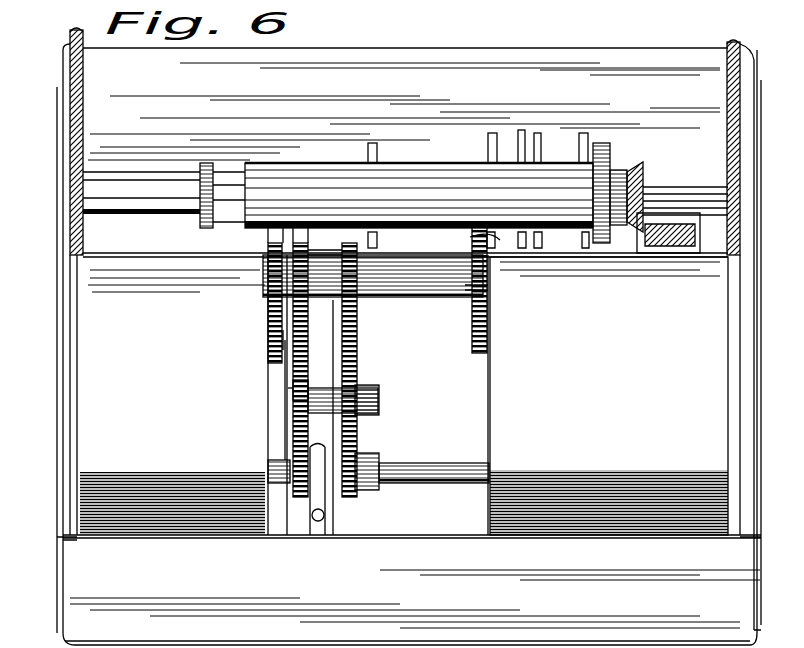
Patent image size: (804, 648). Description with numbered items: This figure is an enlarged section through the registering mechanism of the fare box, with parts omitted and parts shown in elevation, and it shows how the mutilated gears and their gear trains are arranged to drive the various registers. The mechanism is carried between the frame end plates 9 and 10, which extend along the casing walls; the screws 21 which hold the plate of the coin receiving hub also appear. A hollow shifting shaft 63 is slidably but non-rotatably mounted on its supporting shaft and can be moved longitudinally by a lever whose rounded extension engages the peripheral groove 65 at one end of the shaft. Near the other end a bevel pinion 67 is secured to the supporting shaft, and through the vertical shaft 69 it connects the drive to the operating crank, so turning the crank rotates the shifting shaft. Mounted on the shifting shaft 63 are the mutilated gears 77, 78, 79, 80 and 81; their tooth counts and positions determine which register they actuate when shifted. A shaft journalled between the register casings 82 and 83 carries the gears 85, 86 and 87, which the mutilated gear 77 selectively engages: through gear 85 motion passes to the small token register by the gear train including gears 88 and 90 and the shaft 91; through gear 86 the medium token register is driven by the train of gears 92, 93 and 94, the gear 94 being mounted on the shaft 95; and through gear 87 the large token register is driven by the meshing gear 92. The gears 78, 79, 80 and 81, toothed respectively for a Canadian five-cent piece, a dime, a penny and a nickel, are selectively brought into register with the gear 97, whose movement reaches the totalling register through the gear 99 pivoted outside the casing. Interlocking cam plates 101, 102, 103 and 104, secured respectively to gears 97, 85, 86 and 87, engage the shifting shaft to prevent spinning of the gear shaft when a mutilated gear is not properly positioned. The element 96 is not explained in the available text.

The end plate 10 is at (72, 31).
The end plate 9 is at (735, 62).
The hollow shifting shaft 63 is at (275, 178).
The peripheral groove 65 is at (230, 176).
The mutilated gear 77 is at (368, 152).
The mutilated gear 78 is at (488, 138).
The mutilated gear 79 is at (527, 215).
The screws 21 is at (556, 125).
The mutilated gear 80 is at (583, 160).
The mutilated gear 81 is at (608, 157).
The interlocking cam plate 102 is at (377, 238).
The interlocking cam plate 104 is at (278, 235).
The interlocking cam plate 103 is at (312, 227).
The gear 87 is at (420, 278).
The gear 92 is at (268, 341).
The bevel pinion 67 is at (268, 250).
The gear 86 is at (272, 275).
The spring 96 is at (298, 340).
The gear 88 is at (356, 337).
The gear 85 is at (346, 253).
The gear 99 is at (488, 322).
The gear 97 is at (466, 292).
The interlocking cam plate 101 is at (500, 240).
The vertical shaft 69 is at (355, 388).
The casing 83 is at (293, 388).
The gear 93 is at (293, 388).
The shaft 95 is at (280, 470).
The gear 94 is at (310, 495).
The gear 90 is at (365, 460).
The shaft 91 is at (428, 466).
The casing 82 is at (609, 396).